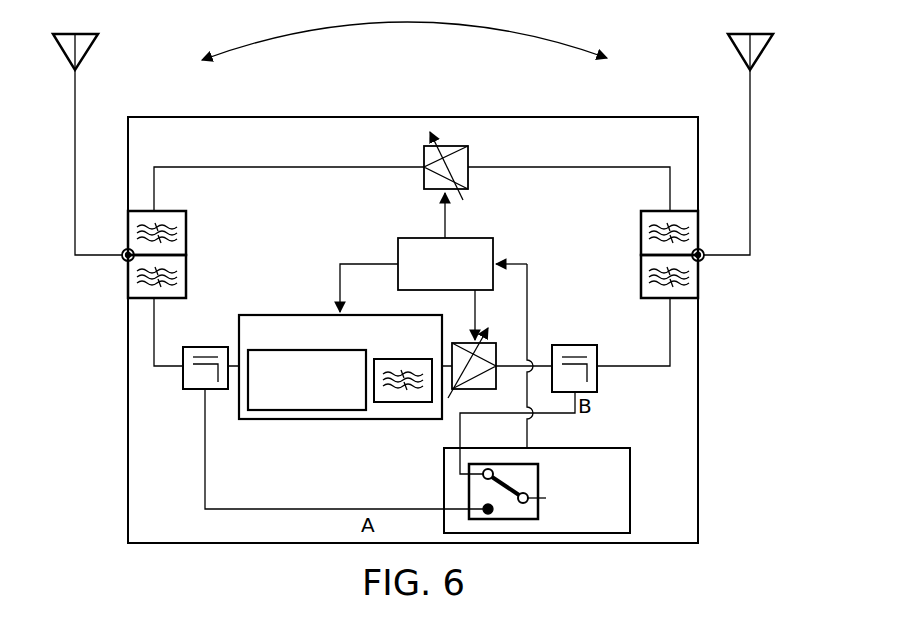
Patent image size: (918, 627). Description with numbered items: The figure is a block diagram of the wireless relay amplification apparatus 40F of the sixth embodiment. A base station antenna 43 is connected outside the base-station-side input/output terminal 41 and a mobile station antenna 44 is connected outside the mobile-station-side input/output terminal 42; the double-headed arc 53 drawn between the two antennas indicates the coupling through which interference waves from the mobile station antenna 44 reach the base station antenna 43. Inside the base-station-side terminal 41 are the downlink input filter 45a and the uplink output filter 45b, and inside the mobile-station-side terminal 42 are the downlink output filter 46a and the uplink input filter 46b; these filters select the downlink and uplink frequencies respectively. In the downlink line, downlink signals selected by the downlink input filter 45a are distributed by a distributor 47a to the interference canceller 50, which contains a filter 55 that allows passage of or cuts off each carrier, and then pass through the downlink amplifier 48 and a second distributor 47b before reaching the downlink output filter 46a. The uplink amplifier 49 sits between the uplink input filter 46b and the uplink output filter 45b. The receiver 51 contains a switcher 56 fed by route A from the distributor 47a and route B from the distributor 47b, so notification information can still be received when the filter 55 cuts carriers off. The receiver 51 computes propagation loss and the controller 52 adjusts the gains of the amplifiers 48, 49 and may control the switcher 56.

The wireless relay amplification apparatus 40F is at (698, 428).
The base-station-side input/output terminal 41 is at (122, 262).
The mobile-station-side input/output terminal 42 is at (704, 262).
The base station antenna 43 is at (92, 46).
The mobile station antenna 44 is at (728, 50).
The downlink input filter 45a is at (186, 277).
The uplink output filter 45b is at (186, 232).
The downlink output filter 46a is at (650, 298).
The uplink input filter 46b is at (648, 211).
The distributor 47a is at (207, 347).
The distributor 47b is at (575, 345).
The downlink amplifier 48 is at (478, 389).
The uplink amplifier 49 is at (468, 150).
The interference canceller 50 is at (310, 419).
The receiver 51 is at (630, 493).
The controller 52 is at (408, 238).
The coupling between antennas 53 is at (410, 22).
The filter 55 is at (403, 402).
The switcher 56 is at (469, 489).